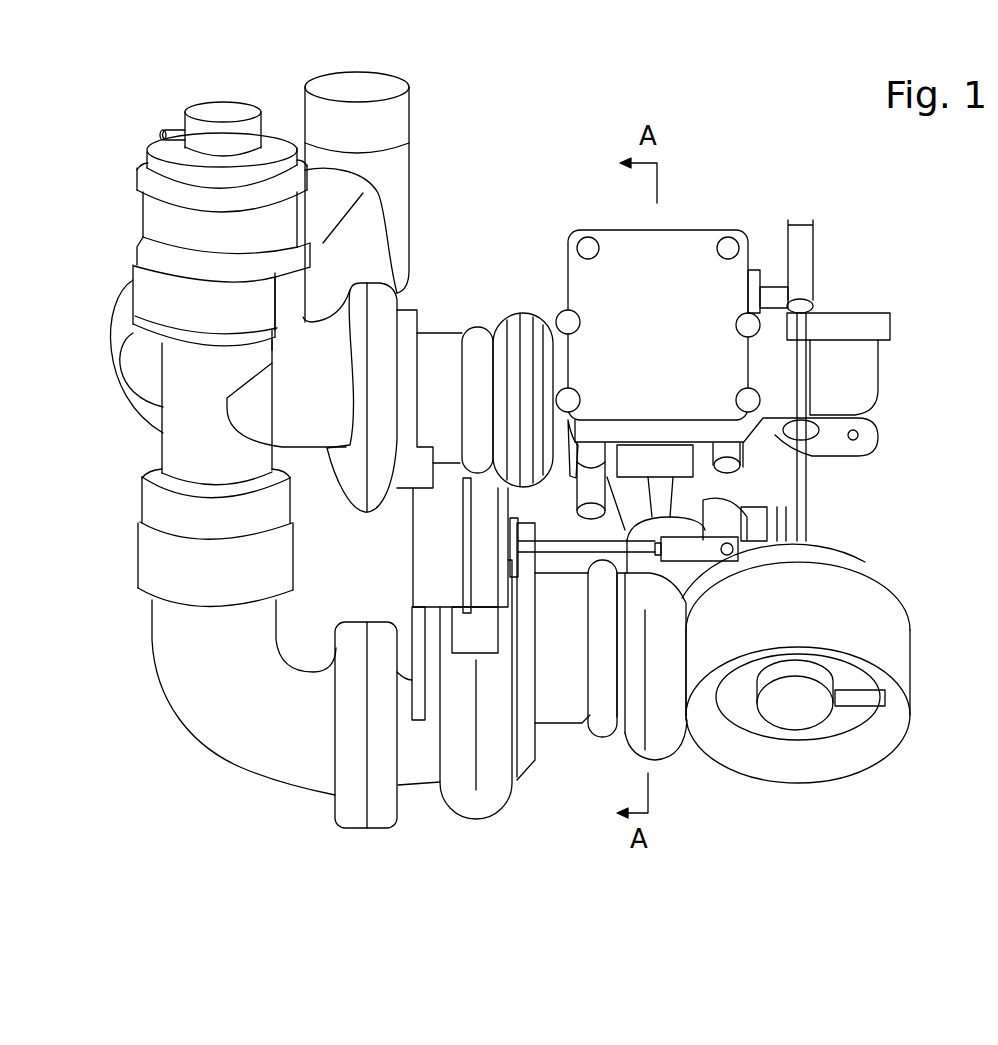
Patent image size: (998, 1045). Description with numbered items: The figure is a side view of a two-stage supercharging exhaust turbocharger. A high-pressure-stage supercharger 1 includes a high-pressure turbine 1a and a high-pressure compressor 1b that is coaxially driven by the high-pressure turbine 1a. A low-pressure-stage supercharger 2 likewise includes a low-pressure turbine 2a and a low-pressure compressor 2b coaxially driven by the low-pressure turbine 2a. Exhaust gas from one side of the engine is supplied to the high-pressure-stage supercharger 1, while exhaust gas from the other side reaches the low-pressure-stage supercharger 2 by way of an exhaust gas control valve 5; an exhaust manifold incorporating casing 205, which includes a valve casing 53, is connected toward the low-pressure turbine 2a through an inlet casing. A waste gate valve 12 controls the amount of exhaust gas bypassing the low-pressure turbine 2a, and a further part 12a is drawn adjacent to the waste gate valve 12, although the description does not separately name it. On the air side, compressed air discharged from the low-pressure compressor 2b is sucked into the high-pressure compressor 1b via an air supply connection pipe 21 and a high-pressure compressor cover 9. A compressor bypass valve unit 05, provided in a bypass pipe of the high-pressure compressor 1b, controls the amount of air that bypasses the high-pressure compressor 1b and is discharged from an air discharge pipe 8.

The high-pressure-stage supercharger 1 is at (465, 300).
The high-pressure turbine 1a is at (530, 323).
The high-pressure compressor 1b is at (398, 285).
The low-pressure-stage supercharger 2 is at (675, 700).
The low-pressure turbine 2a is at (667, 747).
The low-pressure compressor 2b is at (492, 808).
The exhaust gas control valve 5 is at (754, 268).
The air discharge pipe 8 is at (394, 128).
The high-pressure compressor cover 9 is at (172, 452).
The waste gate valve 12 is at (750, 537).
The lever plate 12a is at (412, 539).
The air supply connection pipe 21 is at (205, 720).
The valve casing 53 is at (709, 227).
The exhaust manifold incorporating casing 205 is at (717, 310).
The compressor bypass valve unit 05 is at (124, 244).